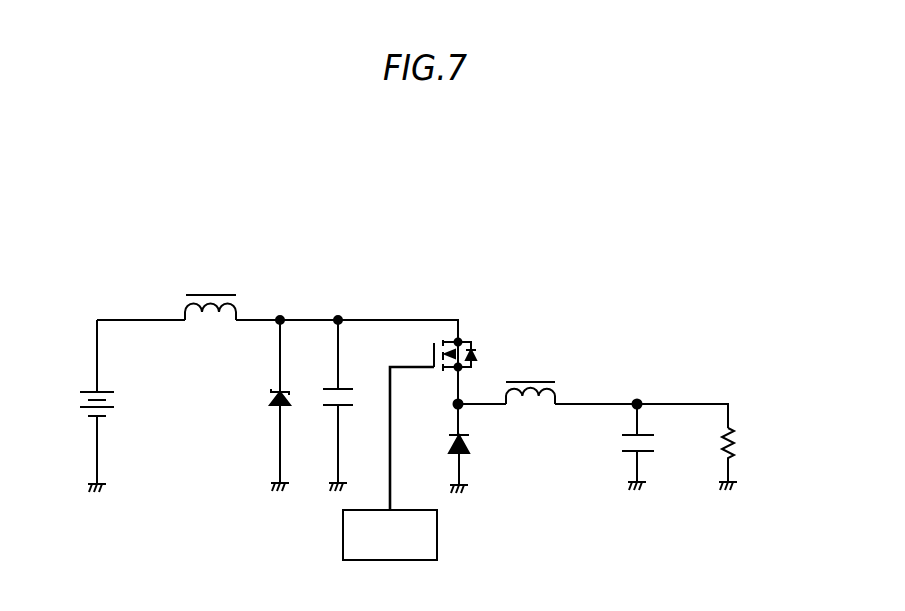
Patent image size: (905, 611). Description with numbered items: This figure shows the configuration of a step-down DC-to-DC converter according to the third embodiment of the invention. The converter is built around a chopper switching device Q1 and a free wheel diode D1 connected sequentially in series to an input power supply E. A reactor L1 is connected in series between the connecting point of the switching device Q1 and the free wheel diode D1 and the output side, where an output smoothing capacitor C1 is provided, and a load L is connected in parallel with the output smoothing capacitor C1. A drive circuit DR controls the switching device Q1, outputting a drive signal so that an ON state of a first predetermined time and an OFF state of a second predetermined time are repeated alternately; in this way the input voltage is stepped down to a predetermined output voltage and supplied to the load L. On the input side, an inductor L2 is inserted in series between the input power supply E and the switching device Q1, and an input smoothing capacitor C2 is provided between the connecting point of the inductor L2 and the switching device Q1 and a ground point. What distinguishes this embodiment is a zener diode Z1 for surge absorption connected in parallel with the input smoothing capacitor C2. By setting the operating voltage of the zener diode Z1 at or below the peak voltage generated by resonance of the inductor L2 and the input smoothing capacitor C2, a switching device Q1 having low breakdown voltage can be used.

The input power supply E is at (77, 403).
The inductor L2 is at (215, 288).
The zener diode Z1 is at (262, 403).
The input smoothing capacitor C2 is at (322, 402).
The switching device Q1 is at (467, 338).
The drive circuit DR is at (438, 533).
The reactor L1 is at (540, 373).
The free wheel diode D1 is at (475, 445).
The output smoothing capacitor C1 is at (662, 457).
The load L is at (737, 437).